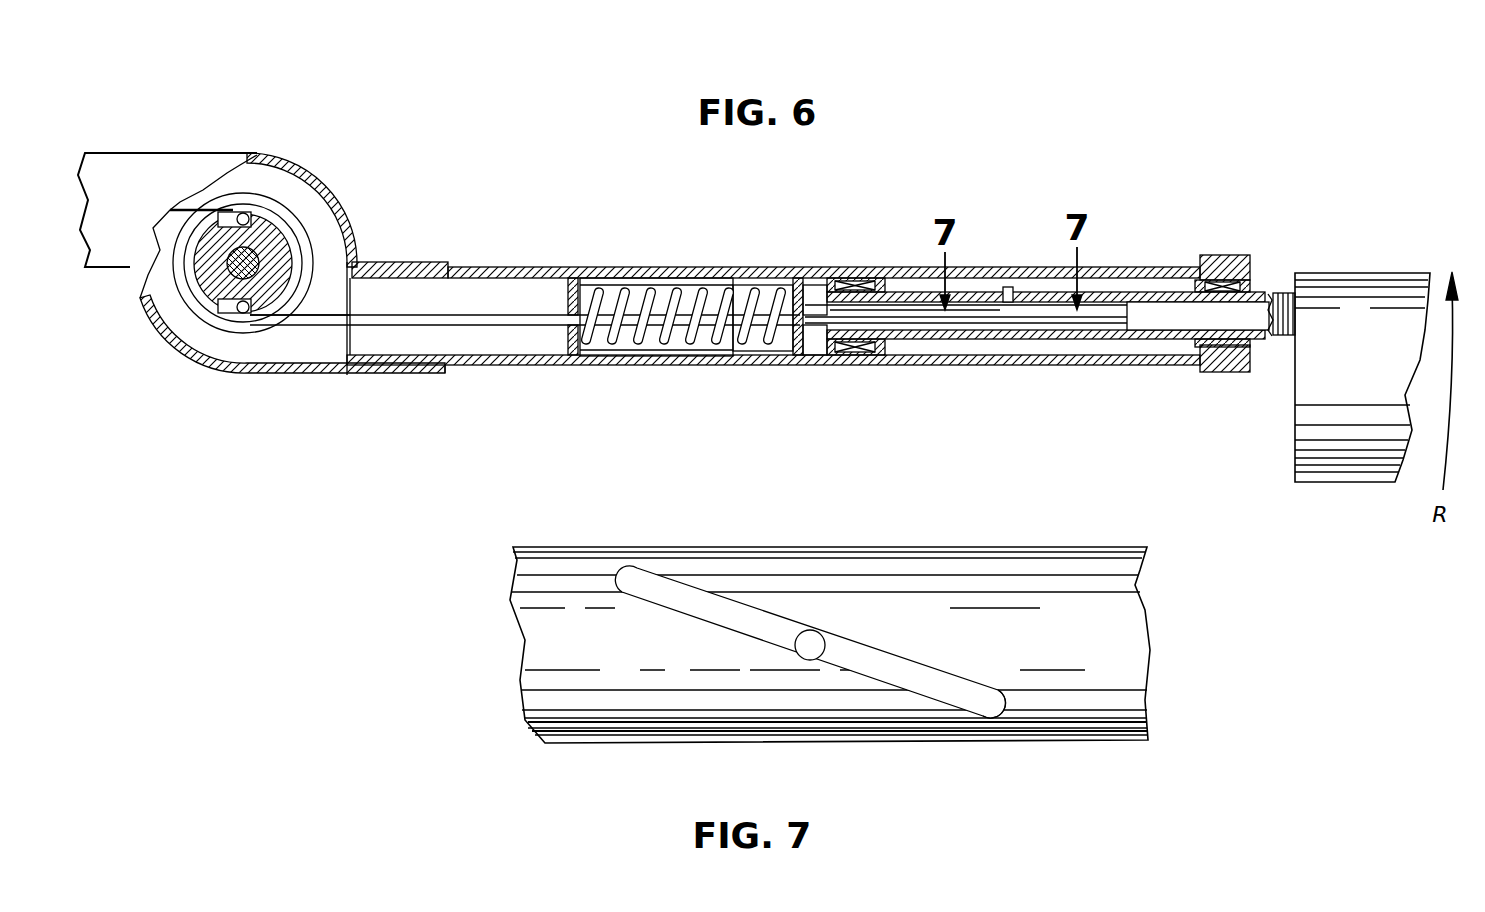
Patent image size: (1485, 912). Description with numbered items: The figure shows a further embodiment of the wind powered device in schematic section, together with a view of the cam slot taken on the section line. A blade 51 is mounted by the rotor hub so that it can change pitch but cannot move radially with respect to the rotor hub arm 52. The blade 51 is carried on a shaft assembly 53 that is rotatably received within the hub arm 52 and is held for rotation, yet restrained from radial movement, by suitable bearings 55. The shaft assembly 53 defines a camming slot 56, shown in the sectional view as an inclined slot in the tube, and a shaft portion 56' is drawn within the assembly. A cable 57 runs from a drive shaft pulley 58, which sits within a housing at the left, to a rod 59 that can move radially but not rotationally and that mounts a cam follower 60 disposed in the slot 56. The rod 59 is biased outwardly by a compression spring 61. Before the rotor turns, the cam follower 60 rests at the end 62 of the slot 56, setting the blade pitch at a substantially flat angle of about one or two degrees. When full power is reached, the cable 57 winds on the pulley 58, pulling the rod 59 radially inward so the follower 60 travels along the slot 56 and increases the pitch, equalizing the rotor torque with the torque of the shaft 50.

In FIG. 6, the shaft 50 is at (258, 255).
In FIG. 6, the blade 51 is at (1302, 443).
In FIG. 6, the rotor hub arm 52 is at (773, 360).
In FIG. 6, the shaft assembly 53 is at (928, 335).
In FIG. 7, the shaft assembly 53 is at (1118, 630).
In FIG. 6, the bearings 55 is at (840, 272).
In FIG. 7, the camming slot 56 is at (810, 604).
In FIG. 6, the shaft 56' is at (966, 353).
In FIG. 6, the cable 57 is at (432, 318).
In FIG. 6, the drive shaft pulley 58 is at (213, 300).
In FIG. 6, the rod 59 is at (1100, 313).
In FIG. 6, the cam follower 60 is at (1007, 288).
In FIG. 7, the cam follower 60 is at (815, 648).
In FIG. 6, the compression spring 61 is at (620, 288).
In FIG. 7, the end of slot 62 is at (985, 710).